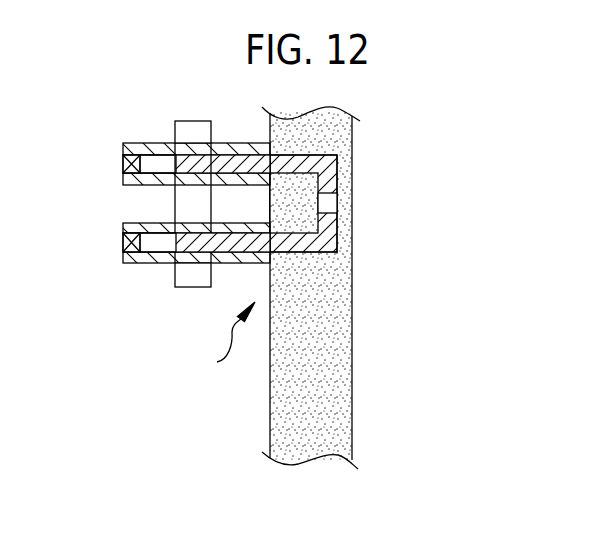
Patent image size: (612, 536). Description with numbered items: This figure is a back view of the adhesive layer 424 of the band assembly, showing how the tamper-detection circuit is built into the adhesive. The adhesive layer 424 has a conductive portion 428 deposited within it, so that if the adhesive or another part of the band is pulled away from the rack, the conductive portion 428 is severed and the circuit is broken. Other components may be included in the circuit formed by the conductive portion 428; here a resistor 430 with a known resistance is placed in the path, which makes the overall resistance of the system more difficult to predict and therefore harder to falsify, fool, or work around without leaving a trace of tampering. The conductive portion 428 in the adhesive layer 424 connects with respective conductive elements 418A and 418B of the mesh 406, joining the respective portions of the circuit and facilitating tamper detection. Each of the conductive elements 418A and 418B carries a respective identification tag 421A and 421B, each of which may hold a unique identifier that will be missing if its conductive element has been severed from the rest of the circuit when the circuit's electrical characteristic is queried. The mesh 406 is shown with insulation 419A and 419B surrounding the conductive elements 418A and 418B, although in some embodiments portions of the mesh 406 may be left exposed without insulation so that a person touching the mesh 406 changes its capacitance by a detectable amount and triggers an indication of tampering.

The mesh 406 is at (218, 338).
The conductive element 418A is at (204, 160).
The conductive element 418B is at (200, 247).
The insulation 419A is at (150, 148).
The insulation 419B is at (152, 260).
The identification tag 421A is at (126, 144).
The identification tag 421B is at (132, 240).
The adhesive layer 424 is at (317, 350).
The conductive portion 428 is at (300, 247).
The resistor 430 is at (325, 203).